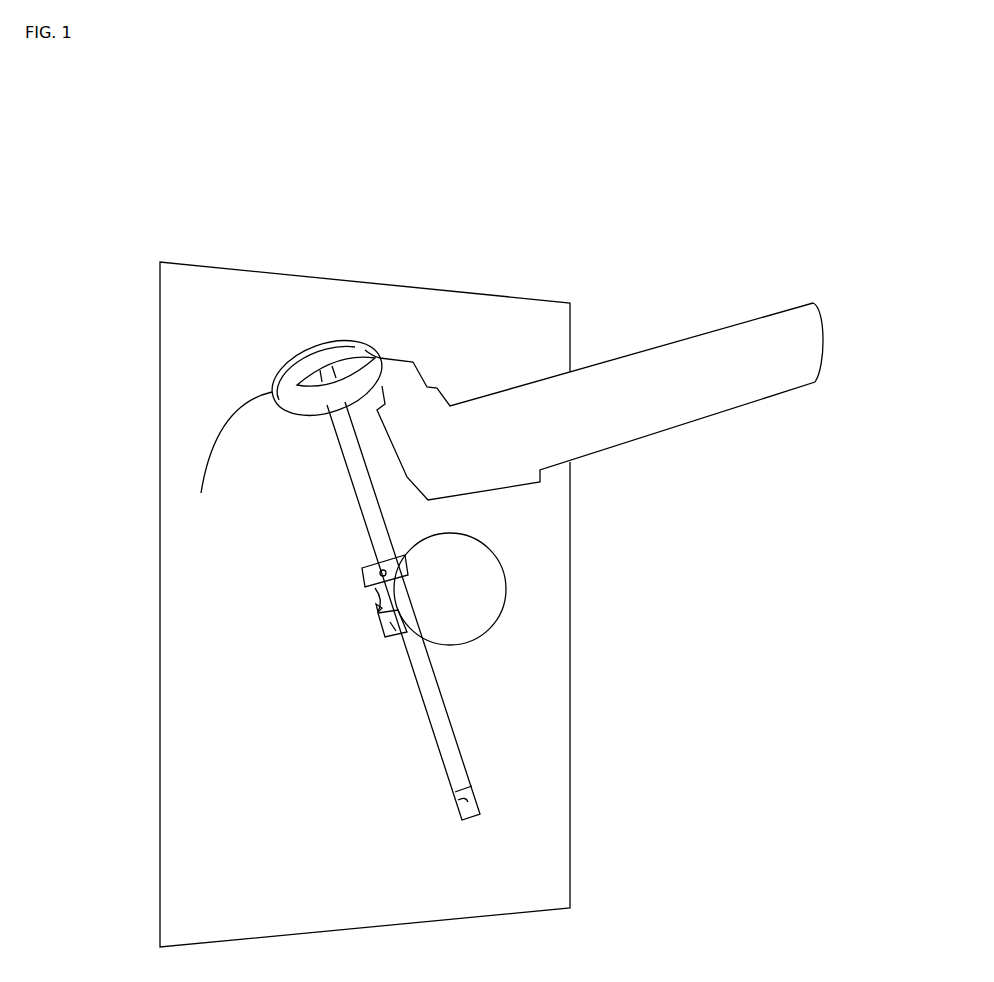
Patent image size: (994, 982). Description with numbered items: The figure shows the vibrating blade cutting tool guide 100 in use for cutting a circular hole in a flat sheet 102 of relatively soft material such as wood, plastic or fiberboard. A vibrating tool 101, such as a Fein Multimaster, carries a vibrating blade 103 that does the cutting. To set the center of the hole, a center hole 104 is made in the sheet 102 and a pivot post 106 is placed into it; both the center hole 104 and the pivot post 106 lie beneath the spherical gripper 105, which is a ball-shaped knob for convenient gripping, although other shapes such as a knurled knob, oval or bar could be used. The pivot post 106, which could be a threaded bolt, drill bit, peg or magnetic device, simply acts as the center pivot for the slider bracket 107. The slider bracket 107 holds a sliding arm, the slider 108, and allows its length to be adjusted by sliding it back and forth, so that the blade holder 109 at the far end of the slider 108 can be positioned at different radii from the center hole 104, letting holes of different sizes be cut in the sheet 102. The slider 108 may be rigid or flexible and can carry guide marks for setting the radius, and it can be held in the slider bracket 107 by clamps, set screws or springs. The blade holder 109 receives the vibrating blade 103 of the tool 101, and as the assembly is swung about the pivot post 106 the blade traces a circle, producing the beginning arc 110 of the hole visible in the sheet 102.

The vibrating blade cutting tool guide 100 is at (525, 220).
The vibrating tool 101 is at (633, 440).
The sheet 102 is at (185, 538).
The vibrating blade 103 is at (353, 353).
The center hole 104 is at (368, 600).
The spherical gripper 105 is at (505, 602).
The pivot post 106 is at (380, 607).
The slider bracket 107 is at (393, 627).
The slider 108 is at (350, 483).
The blade holder 109 is at (297, 357).
The beginning arc 110 is at (237, 415).